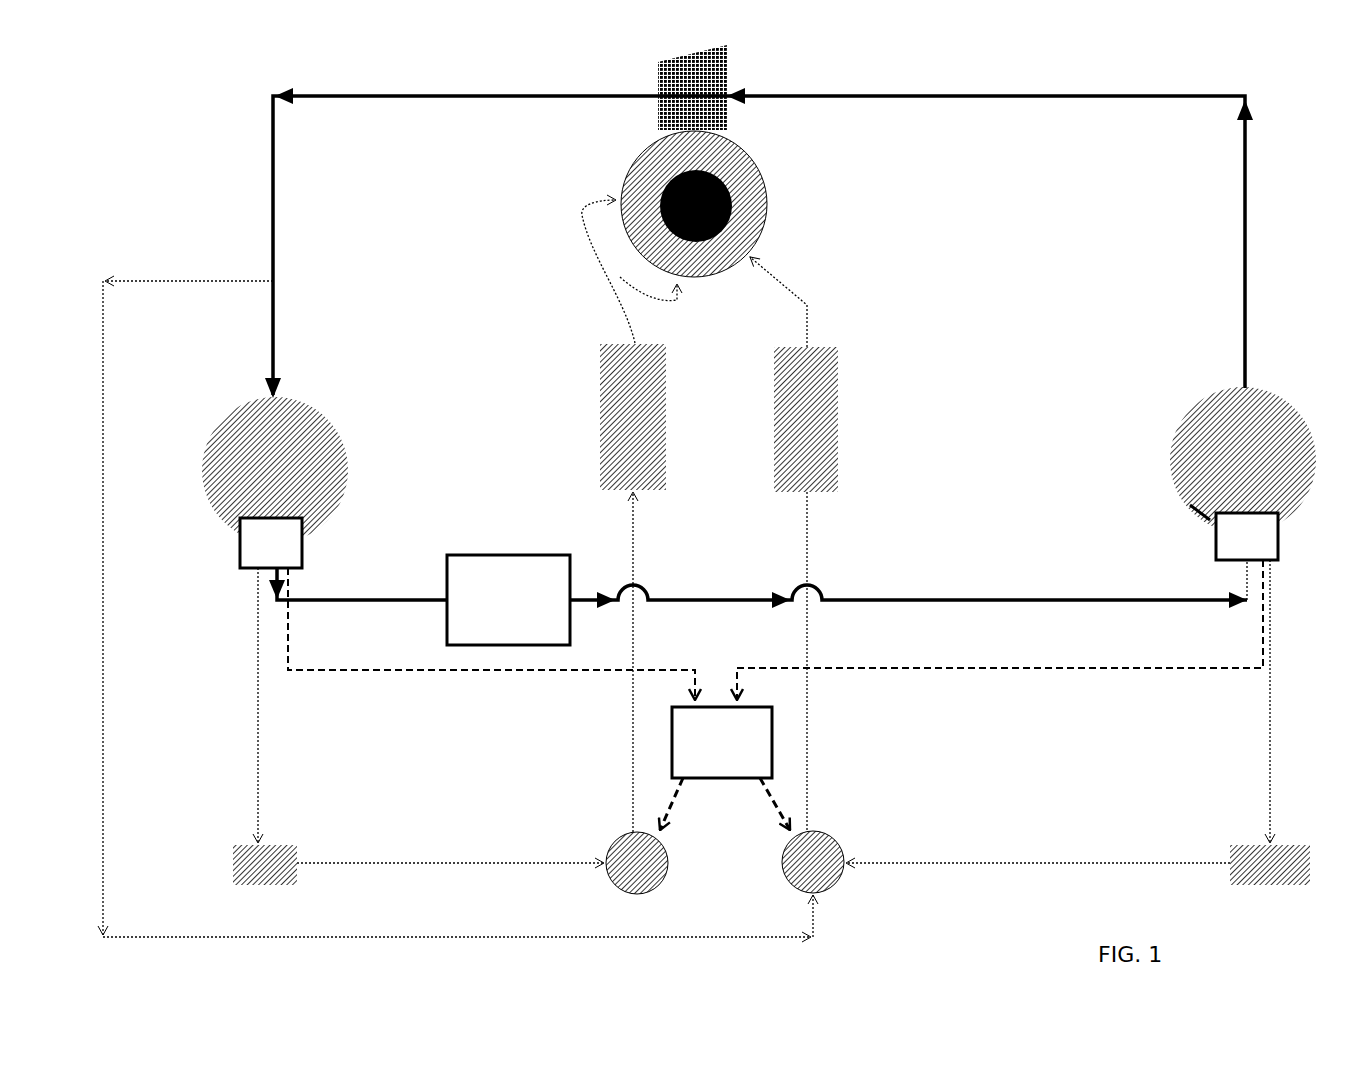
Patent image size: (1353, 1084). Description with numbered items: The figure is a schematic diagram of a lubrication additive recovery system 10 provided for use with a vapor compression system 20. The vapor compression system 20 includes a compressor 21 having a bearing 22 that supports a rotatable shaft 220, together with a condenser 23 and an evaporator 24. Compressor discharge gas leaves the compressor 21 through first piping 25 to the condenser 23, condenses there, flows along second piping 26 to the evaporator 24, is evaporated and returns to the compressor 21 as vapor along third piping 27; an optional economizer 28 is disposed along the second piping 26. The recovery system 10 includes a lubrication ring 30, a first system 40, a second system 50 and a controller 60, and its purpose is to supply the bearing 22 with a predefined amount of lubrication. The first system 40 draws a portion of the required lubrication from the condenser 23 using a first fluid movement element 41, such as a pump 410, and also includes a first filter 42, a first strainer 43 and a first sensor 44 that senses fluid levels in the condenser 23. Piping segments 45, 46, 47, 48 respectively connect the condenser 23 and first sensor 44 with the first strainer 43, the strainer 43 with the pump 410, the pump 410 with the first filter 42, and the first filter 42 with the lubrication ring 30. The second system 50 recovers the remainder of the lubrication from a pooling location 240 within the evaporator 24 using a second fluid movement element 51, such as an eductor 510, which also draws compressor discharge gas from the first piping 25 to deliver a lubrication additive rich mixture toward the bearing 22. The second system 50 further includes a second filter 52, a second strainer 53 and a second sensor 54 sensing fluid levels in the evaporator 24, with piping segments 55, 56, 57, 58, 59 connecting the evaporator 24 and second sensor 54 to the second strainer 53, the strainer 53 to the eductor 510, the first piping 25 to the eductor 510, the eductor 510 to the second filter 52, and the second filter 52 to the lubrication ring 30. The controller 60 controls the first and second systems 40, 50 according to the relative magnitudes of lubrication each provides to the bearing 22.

The lubrication additive recovery system 10 is at (160, 112).
The vapor compression system 20 is at (650, 74).
The compressor 21 is at (722, 66).
The bearing 22 is at (750, 200).
The rotatable shaft 220 is at (668, 183).
The lubrication ring 30 is at (758, 228).
The first piping 25 is at (273, 232).
The third piping 27 is at (1245, 209).
The second piping 26 is at (400, 600).
The optional economizer 28 is at (568, 556).
The condenser 23 is at (315, 425).
The evaporator 24 is at (1195, 428).
The pooling location 240 is at (1200, 515).
The first sensor 44 is at (243, 558).
The second sensor 54 is at (1218, 552).
The first filter 42 is at (606, 432).
The second filter 52 is at (832, 436).
The fourth piping segment 48 is at (620, 308).
The ninth piping segment 59 is at (808, 306).
The first system 40 is at (454, 700).
The second system 50 is at (706, 617).
The first piping segment 45 is at (258, 683).
The second piping segment 46 is at (400, 863).
The third piping segment 47 is at (633, 723).
The first strainer 43 is at (236, 848).
The first fluid movement element 41 is at (642, 868).
The pump 410 is at (614, 850).
The fifth piping segment 55 is at (1268, 697).
The sixth piping segment 56 is at (1022, 863).
The eighth piping segment 58 is at (812, 722).
The second strainer 53 is at (1232, 848).
The second fluid movement element 51 is at (820, 863).
The eductor 510 is at (836, 845).
The seventh piping segment 57 is at (820, 924).
The controller 60 is at (775, 695).